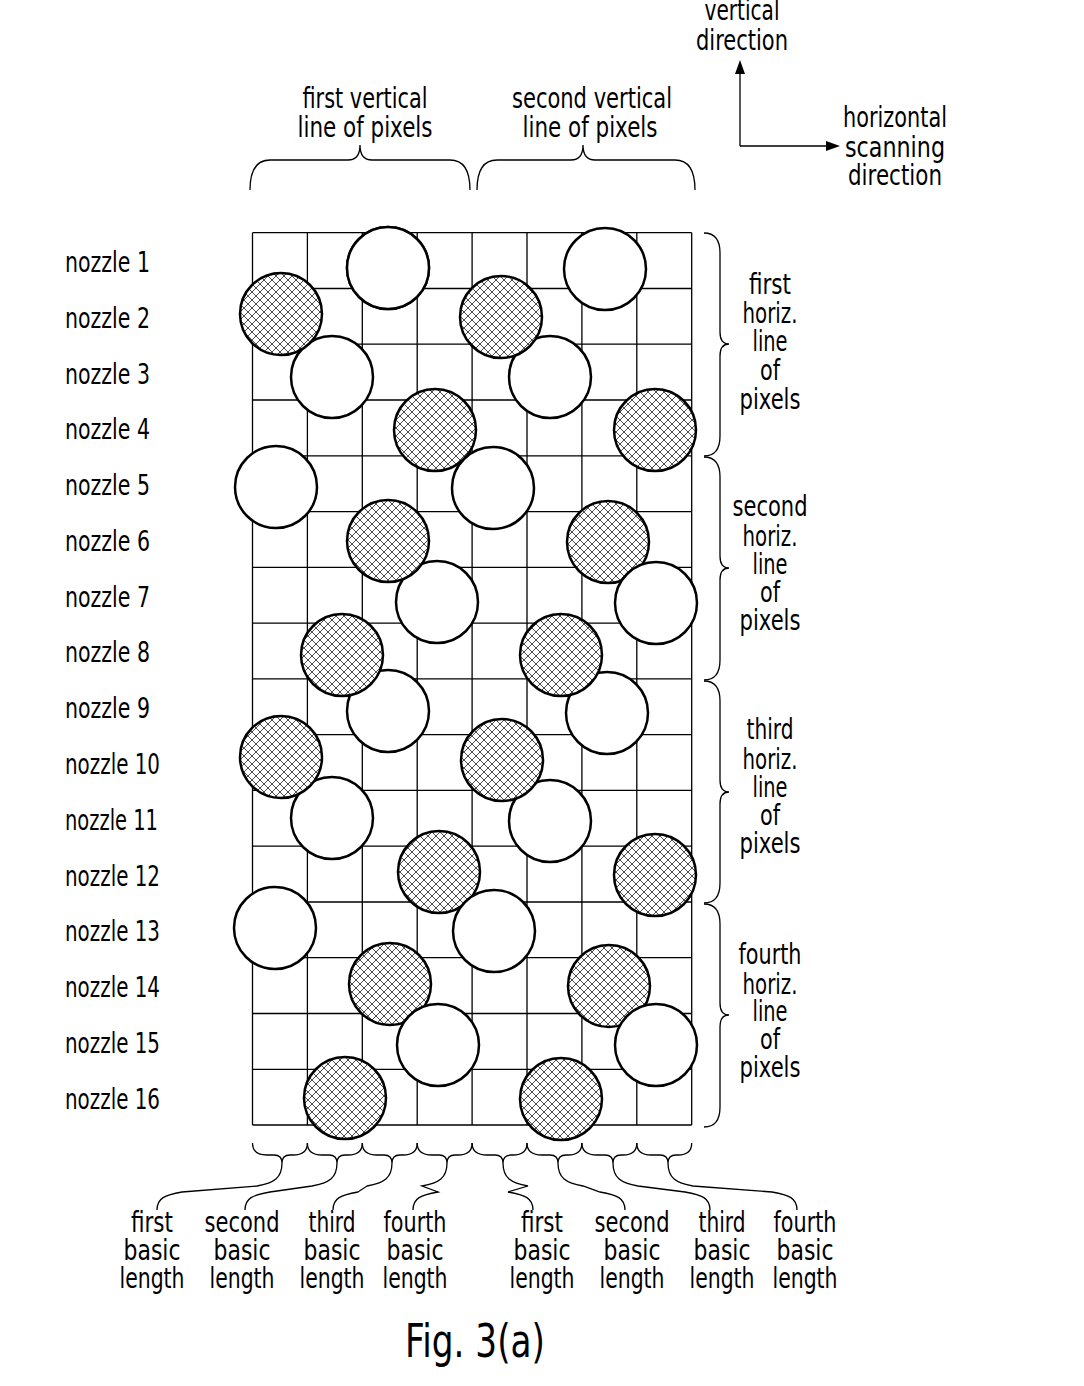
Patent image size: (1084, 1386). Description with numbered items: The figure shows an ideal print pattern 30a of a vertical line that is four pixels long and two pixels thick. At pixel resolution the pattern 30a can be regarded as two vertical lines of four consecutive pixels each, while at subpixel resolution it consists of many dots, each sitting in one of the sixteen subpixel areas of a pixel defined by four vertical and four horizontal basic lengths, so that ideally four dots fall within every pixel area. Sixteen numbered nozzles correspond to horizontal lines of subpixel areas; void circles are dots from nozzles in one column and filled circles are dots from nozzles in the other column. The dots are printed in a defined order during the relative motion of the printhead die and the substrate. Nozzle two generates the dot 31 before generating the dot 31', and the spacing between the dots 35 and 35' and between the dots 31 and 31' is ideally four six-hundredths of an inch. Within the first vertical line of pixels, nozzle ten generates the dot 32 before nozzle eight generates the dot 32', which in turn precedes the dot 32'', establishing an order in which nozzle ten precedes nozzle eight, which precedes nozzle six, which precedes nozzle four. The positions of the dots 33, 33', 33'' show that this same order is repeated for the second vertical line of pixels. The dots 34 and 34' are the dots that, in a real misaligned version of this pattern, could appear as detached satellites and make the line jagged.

The ideal print pattern 30a is at (188, 210).
The dot 31 is at (245, 313).
The dot 31' is at (501, 273).
The dot 32 is at (249, 756).
The dot 32' is at (286, 655).
The dot 32'' is at (308, 541).
The dot 33 is at (491, 725).
The dot 33' is at (547, 619).
The dot 33'' is at (594, 506).
The dot 34 is at (656, 565).
The dot 34' is at (656, 1006).
The dot 35 is at (353, 249).
The dot 35' is at (642, 249).